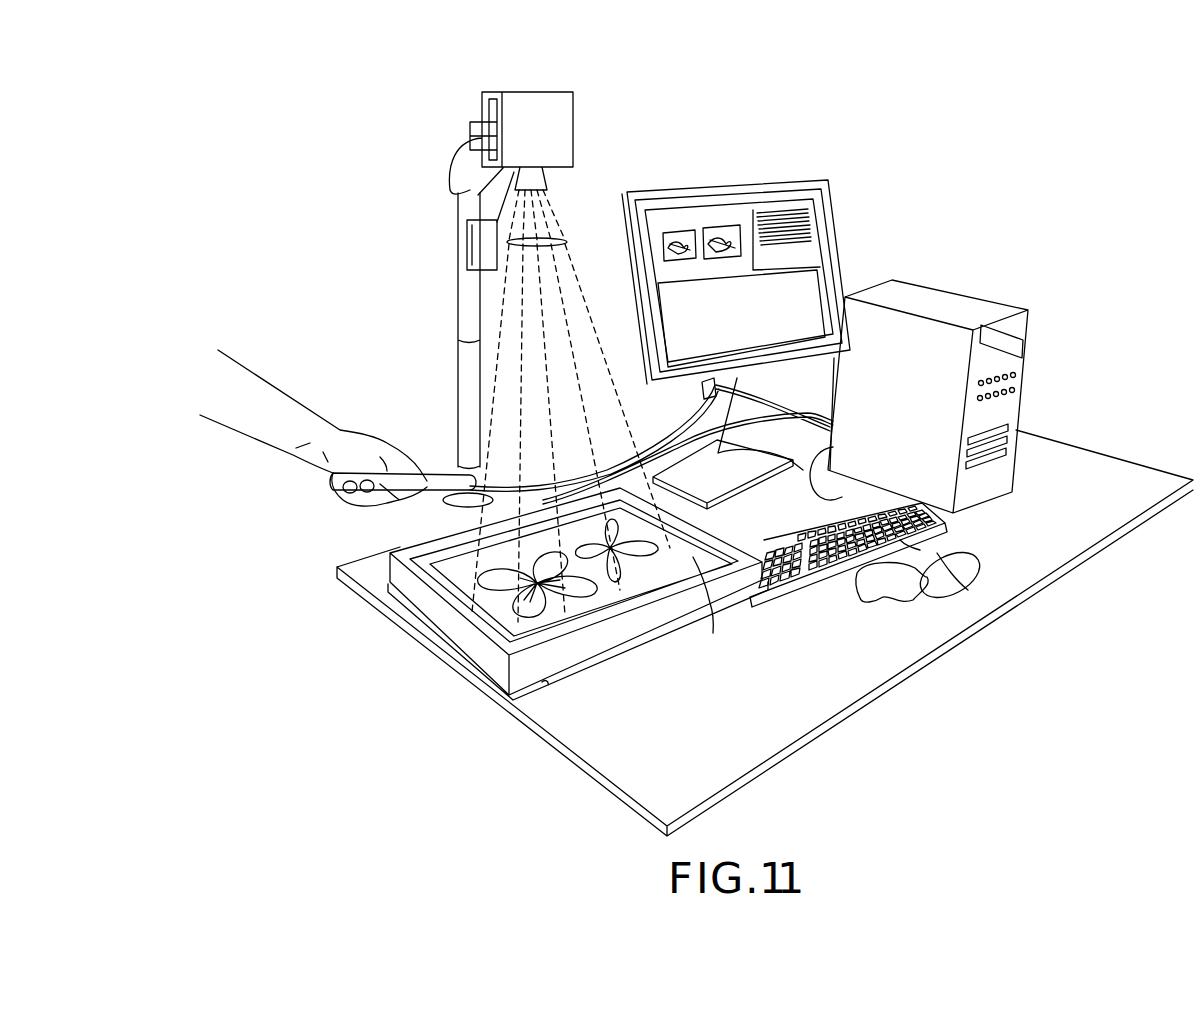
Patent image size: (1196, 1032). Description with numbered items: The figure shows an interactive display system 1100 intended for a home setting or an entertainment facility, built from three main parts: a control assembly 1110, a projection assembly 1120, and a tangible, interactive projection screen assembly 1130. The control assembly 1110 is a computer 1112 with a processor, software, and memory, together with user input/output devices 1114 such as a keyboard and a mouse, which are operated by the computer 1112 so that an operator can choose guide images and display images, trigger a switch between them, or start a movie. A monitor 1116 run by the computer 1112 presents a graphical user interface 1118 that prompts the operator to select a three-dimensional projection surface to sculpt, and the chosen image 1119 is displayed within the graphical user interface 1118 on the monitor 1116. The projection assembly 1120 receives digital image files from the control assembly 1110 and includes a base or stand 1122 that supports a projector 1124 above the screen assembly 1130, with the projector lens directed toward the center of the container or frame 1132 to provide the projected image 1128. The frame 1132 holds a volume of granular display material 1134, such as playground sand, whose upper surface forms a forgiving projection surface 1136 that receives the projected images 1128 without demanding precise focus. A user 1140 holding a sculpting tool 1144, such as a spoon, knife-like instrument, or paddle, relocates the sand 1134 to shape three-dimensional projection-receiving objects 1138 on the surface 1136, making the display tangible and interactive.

The interactive display system 1100 is at (972, 168).
The control assembly 1110 is at (1007, 558).
The computer 1112 is at (920, 282).
The user input/output devices 1114 is at (921, 586).
The monitor 1116 is at (833, 207).
The graphical user interface 1118 is at (805, 293).
The chosen image 1119 is at (676, 232).
The projection assembly 1120 is at (418, 106).
The base or stand 1122 is at (458, 211).
The projector 1124 is at (574, 110).
The projected image 1128 is at (567, 242).
The projection screen assembly 1130 is at (390, 664).
The container or frame 1132 is at (337, 566).
The display material 1134 is at (742, 521).
The projection surface 1136 is at (713, 633).
The 3D projection-receiving objects 1138 is at (627, 578).
The user 1140 is at (268, 453).
The sculpting tool 1144 is at (447, 473).